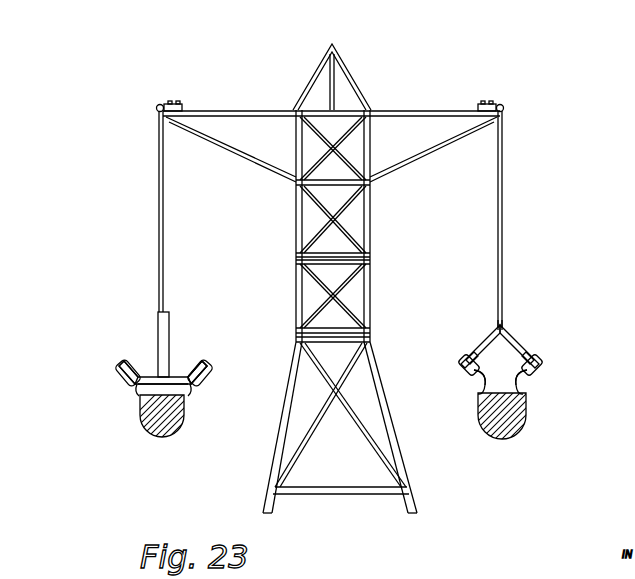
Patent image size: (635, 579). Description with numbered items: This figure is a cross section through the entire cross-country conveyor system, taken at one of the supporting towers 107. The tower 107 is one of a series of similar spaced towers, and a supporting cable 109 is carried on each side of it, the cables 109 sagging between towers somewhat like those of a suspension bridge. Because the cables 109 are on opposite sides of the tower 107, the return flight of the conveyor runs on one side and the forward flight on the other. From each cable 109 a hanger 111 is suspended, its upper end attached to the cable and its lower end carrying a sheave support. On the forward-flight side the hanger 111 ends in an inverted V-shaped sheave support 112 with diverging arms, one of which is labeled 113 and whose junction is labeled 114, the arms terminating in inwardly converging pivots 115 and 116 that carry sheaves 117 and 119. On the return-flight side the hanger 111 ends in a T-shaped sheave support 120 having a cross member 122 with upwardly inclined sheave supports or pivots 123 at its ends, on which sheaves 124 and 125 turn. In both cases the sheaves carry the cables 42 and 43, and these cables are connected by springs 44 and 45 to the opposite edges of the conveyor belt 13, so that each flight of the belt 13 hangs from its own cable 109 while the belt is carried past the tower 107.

The conveyor belt 13 is at (160, 438).
The cable 42 is at (147, 362).
The cable 43 is at (192, 363).
The spring 44 is at (113, 385).
The spring 45 is at (212, 377).
The supporting tower 107 is at (296, 248).
The cable 109 is at (156, 107).
The hanger 111 is at (157, 233).
The sheave support 112 is at (533, 347).
The yoke arm 113 is at (493, 332).
The yoke apex 114 is at (512, 330).
The pivot 115 is at (462, 367).
The pivot 116 is at (545, 367).
The sheave 117 is at (483, 378).
The sheave 119 is at (522, 378).
The sheave support 120 is at (170, 370).
The cross member 122 is at (178, 407).
The sheave support or pivot 123 is at (133, 395).
The sheave 124 is at (133, 372).
The sheave 125 is at (202, 370).